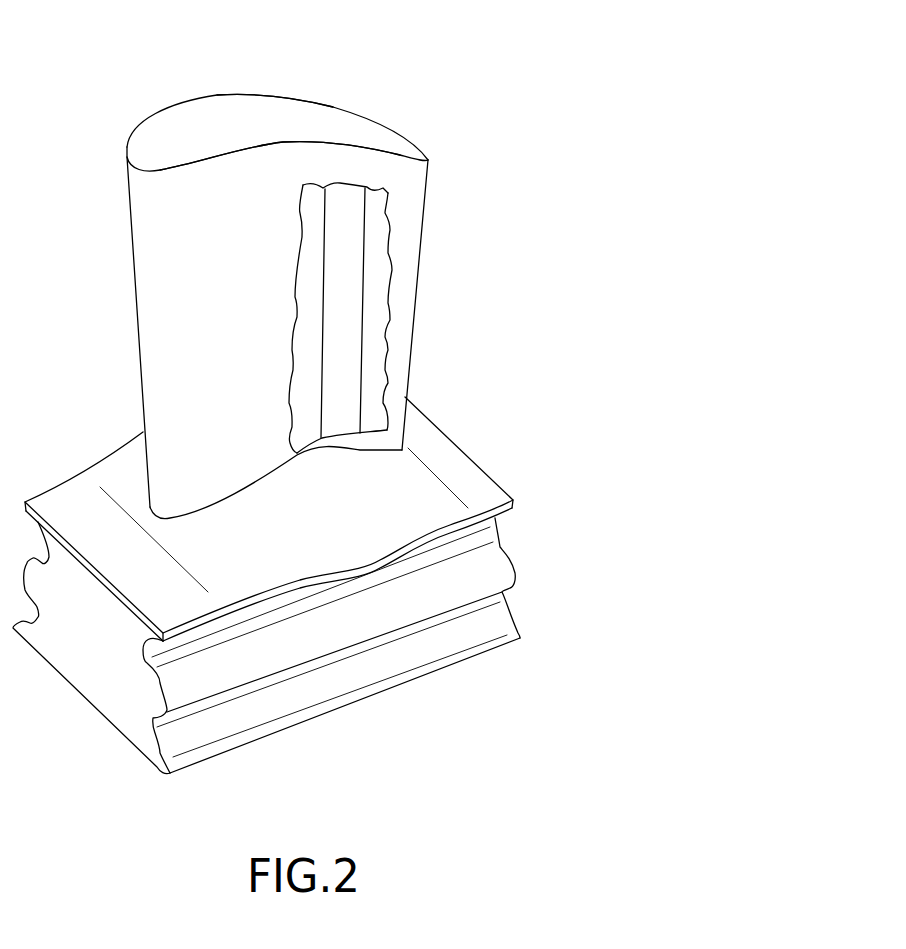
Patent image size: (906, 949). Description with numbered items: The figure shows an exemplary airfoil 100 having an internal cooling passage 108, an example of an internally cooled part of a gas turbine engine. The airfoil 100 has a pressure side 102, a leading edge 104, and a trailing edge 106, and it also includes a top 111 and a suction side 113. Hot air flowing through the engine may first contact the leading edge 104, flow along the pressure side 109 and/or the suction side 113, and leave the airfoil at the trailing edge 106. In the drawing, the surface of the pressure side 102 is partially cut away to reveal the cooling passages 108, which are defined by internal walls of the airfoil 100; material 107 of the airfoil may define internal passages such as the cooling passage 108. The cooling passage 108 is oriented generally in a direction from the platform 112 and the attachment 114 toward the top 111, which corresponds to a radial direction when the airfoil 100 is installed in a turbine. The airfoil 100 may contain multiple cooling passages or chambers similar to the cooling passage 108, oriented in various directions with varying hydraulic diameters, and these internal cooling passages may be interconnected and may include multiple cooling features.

The airfoil 100 is at (479, 117).
The pressure side 102 is at (185, 240).
The leading edge 104 is at (135, 287).
The trailing edge 106 is at (420, 268).
The material 107 is at (382, 355).
The cooling passage 108 is at (350, 227).
The pressure side 109 is at (265, 187).
The top 111 is at (208, 117).
The platform 112 is at (460, 485).
The suction side 113 is at (262, 93).
The attachment 114 is at (493, 620).